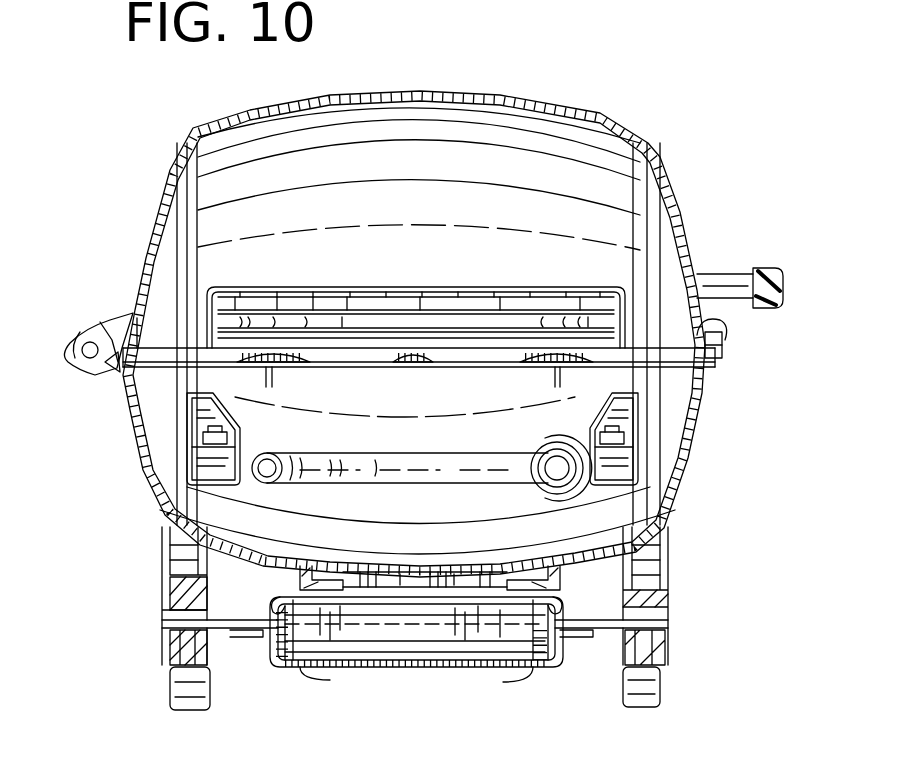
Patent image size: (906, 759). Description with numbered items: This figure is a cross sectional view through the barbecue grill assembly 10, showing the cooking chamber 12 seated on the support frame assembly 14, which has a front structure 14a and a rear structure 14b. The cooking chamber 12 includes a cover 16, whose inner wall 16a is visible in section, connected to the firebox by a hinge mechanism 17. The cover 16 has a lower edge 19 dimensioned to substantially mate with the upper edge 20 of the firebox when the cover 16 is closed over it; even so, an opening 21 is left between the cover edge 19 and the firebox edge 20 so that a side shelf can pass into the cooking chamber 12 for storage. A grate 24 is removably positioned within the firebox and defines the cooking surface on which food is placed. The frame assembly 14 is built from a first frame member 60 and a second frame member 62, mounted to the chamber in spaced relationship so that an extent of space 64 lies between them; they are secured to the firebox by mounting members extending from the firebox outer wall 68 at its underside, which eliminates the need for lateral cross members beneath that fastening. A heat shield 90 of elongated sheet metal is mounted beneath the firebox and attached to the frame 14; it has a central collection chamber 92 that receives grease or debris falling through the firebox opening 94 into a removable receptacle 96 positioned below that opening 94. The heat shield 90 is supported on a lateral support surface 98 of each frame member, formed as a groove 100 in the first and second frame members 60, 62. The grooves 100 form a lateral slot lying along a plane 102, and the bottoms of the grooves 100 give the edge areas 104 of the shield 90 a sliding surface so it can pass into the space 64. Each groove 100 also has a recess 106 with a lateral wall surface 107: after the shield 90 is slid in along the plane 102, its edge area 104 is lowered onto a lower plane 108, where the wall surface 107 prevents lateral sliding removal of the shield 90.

The barbecue grill assembly 10 is at (76, 446).
The cooking chamber 12 is at (98, 242).
The support frame assembly 14 is at (754, 542).
The front structure 14a is at (665, 550).
The rear structure 14b is at (177, 548).
The cover 16 is at (561, 113).
The lid inner wall 16a is at (583, 117).
The hinge mechanism 17 is at (98, 325).
The lower edge 19 is at (598, 300).
The upper edge 20 is at (112, 368).
The opening 21 is at (597, 300).
The grate 24 is at (183, 352).
The first frame member 60 is at (668, 636).
The second frame member 62 is at (163, 598).
The extent of space 64 is at (610, 693).
The outer wall 68 is at (265, 572).
The heat shield 90 is at (558, 660).
The collection chamber 92 is at (328, 684).
The opening 94 is at (278, 610).
The removable receptacle 96 is at (540, 664).
The lateral support surface 98 is at (197, 642).
The groove 100 is at (220, 642).
The plane 102 is at (145, 613).
The edge area 104 is at (668, 658).
The recess 106 is at (176, 626).
The lateral wall surface 107 is at (185, 603).
The lower plane 108 is at (693, 625).